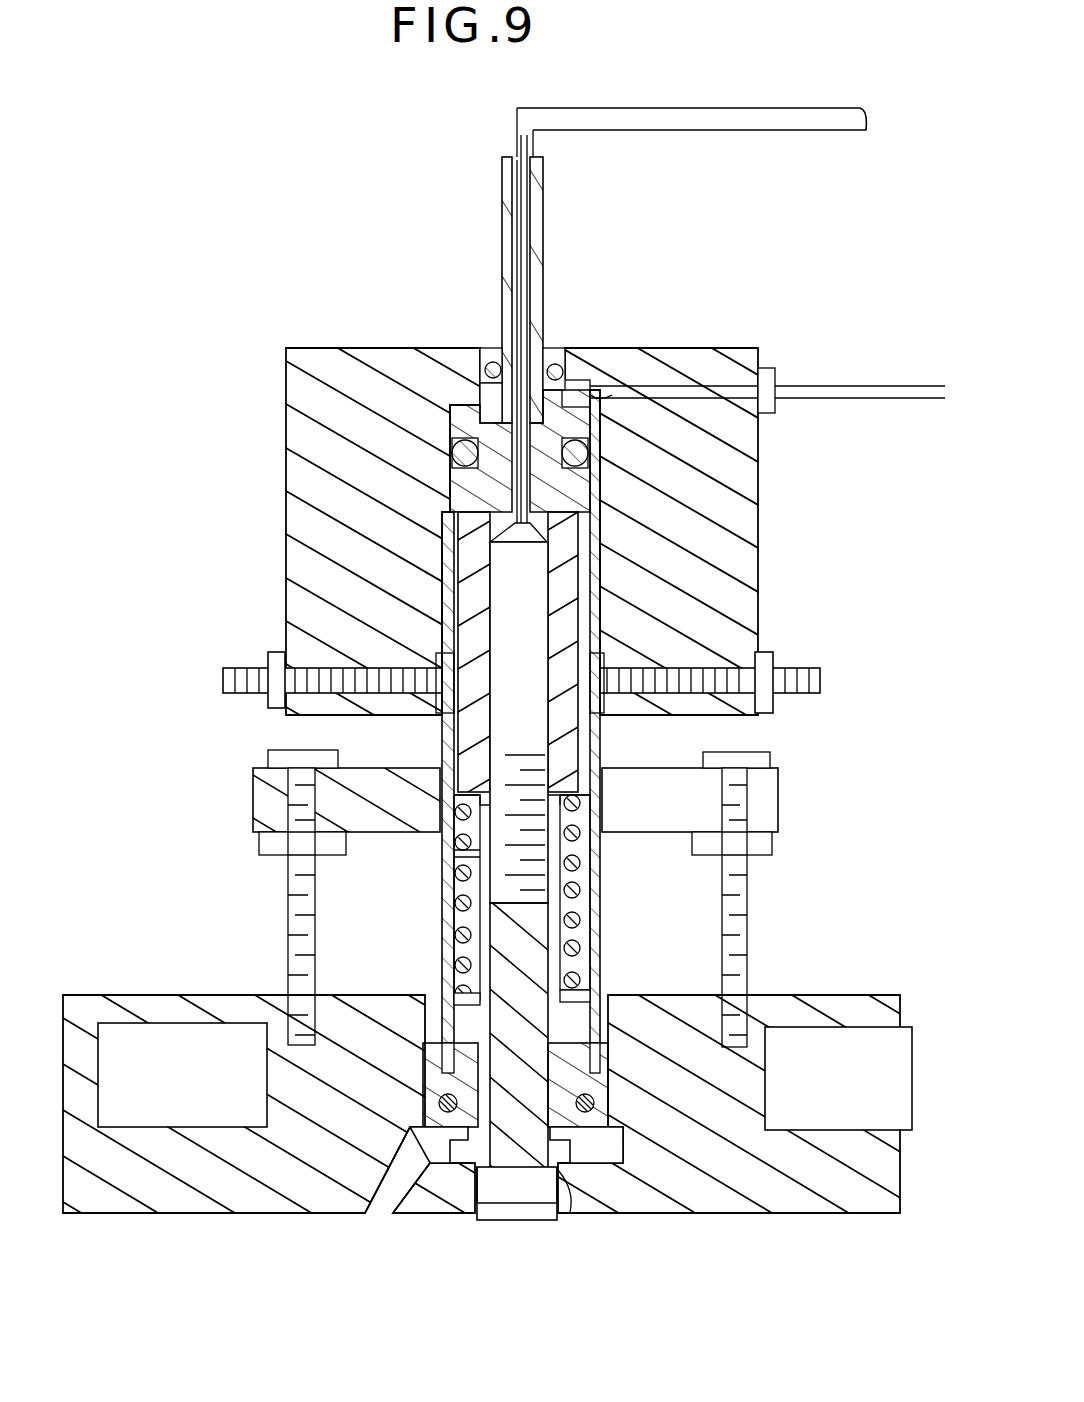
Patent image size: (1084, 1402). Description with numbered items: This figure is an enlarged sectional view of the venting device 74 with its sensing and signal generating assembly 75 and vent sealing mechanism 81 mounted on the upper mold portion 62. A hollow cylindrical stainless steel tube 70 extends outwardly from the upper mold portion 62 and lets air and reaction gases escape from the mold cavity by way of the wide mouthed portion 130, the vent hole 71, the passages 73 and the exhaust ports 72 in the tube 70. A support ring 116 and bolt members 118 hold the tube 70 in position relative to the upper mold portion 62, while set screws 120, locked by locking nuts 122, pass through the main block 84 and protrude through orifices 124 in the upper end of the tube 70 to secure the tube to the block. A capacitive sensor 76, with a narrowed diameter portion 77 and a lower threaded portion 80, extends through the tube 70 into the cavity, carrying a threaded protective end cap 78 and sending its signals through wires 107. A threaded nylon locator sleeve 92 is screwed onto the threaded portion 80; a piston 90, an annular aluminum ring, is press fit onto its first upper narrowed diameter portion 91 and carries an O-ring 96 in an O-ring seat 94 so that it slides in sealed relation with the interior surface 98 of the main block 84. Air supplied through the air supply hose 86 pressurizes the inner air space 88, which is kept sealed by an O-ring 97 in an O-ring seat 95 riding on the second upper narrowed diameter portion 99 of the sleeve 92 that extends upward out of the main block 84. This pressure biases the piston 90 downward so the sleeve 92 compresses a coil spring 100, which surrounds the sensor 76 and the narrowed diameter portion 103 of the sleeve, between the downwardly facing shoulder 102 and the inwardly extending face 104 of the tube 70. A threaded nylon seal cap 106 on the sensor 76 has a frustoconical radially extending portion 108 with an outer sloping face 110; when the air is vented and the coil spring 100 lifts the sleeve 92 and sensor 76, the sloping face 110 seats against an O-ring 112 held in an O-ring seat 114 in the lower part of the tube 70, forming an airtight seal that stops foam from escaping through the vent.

The upper mold portion 62 is at (773, 1190).
The hollow cylindrical tube 70 is at (443, 742).
The vent hole 71 is at (602, 1010).
The exhaust ports 72 is at (455, 886).
The passages 73 is at (447, 996).
The venting device 74 is at (888, 608).
The sensing and signal generating assembly 75 is at (470, 1245).
The capacitive sensor 76 is at (515, 1192).
The narrowed diameter portion 77 is at (540, 205).
The threaded protective end cap 78 is at (562, 1168).
The lower threaded portion 80 is at (525, 850).
The vent sealing mechanism 81 is at (422, 1150).
The main block 84 is at (758, 603).
The air supply hose 86 is at (876, 398).
The inner air space 88 is at (612, 384).
The piston 90 is at (470, 478).
The first upper narrowed diameter portion 91 is at (565, 520).
The threaded nylon locator sleeve 92 is at (565, 548).
The O-ring seat 94 is at (466, 410).
The O-ring seat 95 is at (555, 362).
The O-ring 96 is at (452, 445).
The O-ring 97 is at (562, 400).
The interior surface 98 is at (645, 392).
The second upper narrowed diameter portion 99 is at (508, 185).
The coil spring 100 is at (600, 925).
The downwardly facing shoulder 102 is at (605, 796).
The narrowed diameter portion 103 is at (450, 857).
The inwardly extending face 104 is at (448, 938).
The threaded nylon seal cap 106 is at (440, 1030).
The wires 107 is at (822, 118).
The radially extending portion 108 is at (432, 1170).
The outer sloping face 110 is at (588, 1150).
The O-ring 112 is at (603, 1125).
The O-ring seat 114 is at (378, 1205).
The support ring 116 is at (262, 800).
The bolt members 118 is at (292, 957).
The set screws 120 is at (226, 680).
The locking nuts 122 is at (768, 662).
The orifices 124 is at (442, 705).
The wide mouthed portion 130 is at (612, 1138).